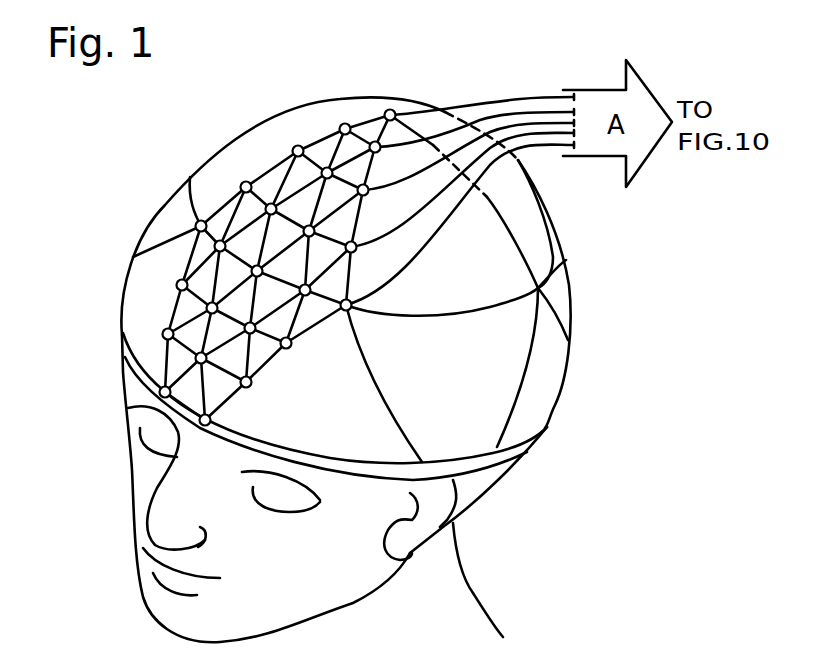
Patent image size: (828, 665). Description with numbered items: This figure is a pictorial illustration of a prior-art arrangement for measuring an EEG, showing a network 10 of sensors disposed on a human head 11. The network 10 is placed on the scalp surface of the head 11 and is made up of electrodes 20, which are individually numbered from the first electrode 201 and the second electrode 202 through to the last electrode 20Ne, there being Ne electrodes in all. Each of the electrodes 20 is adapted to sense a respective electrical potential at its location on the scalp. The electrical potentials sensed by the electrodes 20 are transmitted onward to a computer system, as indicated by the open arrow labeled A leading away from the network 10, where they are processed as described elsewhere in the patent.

The network 10 is at (341, 250).
The human head 11 is at (607, 375).
The electrodes 20 is at (391, 112).
The electrode 20Ne is at (343, 126).
The electrode 201 is at (200, 422).
The electrode 202 is at (243, 384).